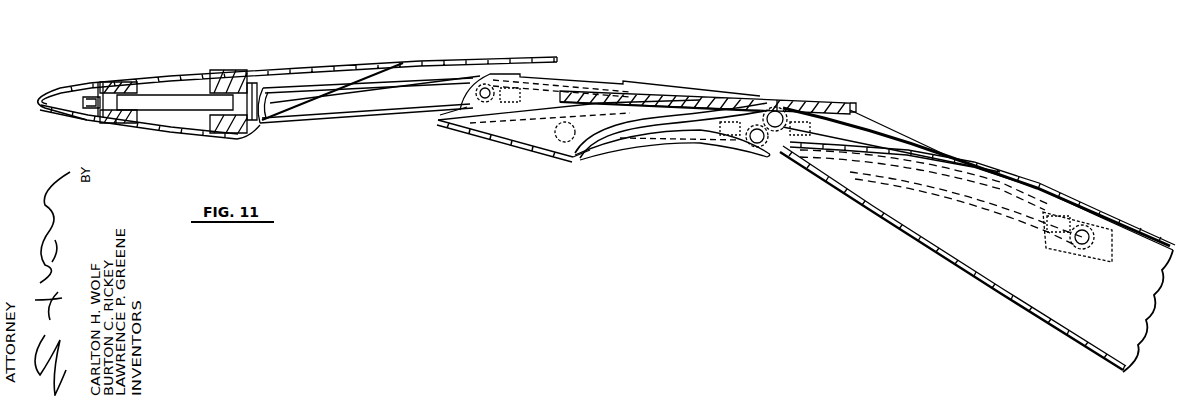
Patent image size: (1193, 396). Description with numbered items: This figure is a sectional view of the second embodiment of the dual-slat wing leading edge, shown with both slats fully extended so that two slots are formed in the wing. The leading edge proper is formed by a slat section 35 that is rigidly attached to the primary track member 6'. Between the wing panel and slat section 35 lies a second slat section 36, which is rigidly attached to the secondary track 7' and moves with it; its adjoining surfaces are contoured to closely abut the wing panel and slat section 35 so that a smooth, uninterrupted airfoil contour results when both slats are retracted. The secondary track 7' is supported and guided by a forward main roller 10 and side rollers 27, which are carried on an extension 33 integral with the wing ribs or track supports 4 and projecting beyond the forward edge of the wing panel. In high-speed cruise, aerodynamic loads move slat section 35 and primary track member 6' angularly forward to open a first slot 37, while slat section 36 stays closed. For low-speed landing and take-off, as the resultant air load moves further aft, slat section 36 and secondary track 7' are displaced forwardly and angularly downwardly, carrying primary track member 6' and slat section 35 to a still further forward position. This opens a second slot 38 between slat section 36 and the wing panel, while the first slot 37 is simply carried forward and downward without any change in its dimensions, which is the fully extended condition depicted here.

The slat section 35 is at (490, 64).
The primary track member 6' is at (369, 105).
The first slot 37 is at (577, 72).
The secondary track 7' is at (672, 141).
The second slat section 36 is at (743, 99).
The forward main roller 10 is at (790, 110).
The side roller 27 is at (820, 110).
The extension 33 is at (820, 136).
The second slot 38 is at (885, 142).
The wing ribs 4 is at (927, 208).